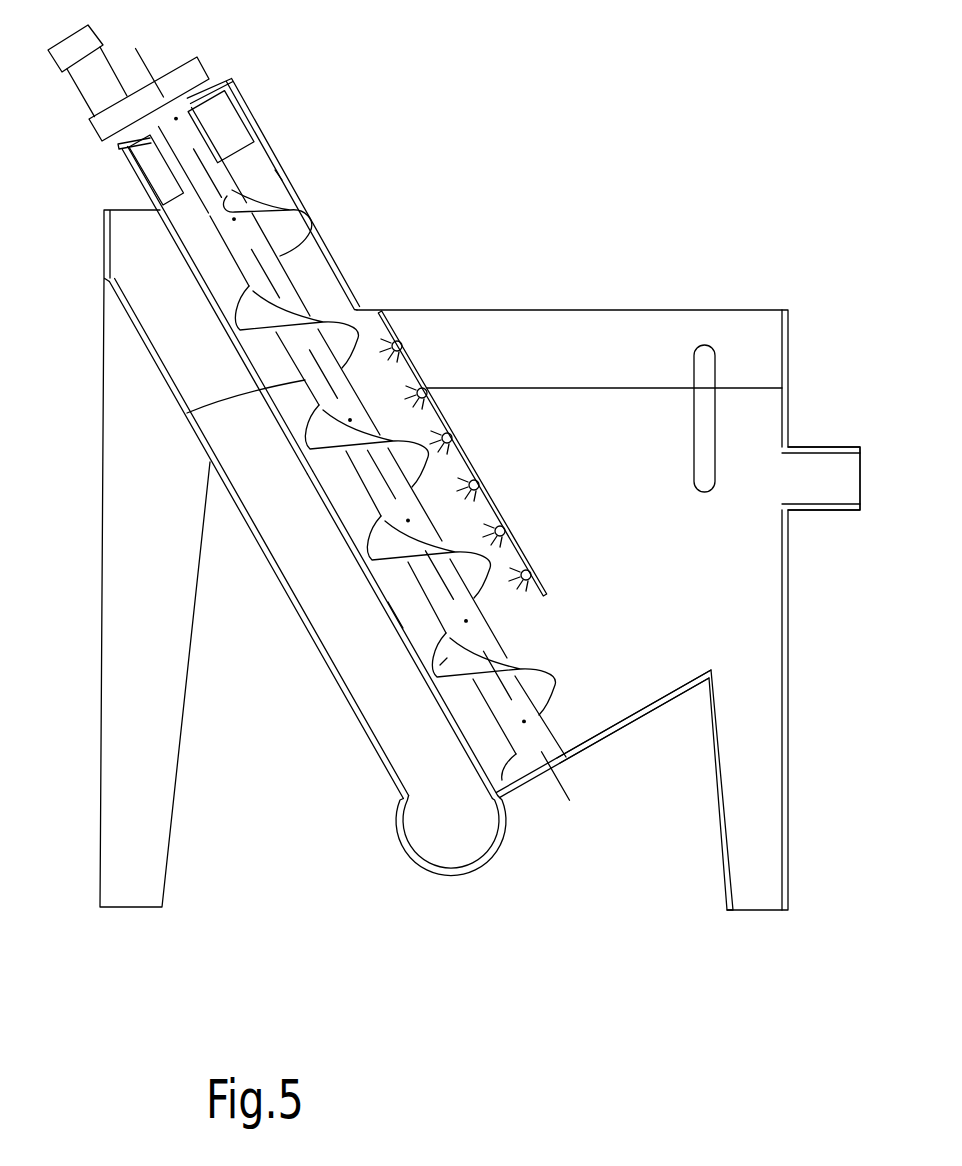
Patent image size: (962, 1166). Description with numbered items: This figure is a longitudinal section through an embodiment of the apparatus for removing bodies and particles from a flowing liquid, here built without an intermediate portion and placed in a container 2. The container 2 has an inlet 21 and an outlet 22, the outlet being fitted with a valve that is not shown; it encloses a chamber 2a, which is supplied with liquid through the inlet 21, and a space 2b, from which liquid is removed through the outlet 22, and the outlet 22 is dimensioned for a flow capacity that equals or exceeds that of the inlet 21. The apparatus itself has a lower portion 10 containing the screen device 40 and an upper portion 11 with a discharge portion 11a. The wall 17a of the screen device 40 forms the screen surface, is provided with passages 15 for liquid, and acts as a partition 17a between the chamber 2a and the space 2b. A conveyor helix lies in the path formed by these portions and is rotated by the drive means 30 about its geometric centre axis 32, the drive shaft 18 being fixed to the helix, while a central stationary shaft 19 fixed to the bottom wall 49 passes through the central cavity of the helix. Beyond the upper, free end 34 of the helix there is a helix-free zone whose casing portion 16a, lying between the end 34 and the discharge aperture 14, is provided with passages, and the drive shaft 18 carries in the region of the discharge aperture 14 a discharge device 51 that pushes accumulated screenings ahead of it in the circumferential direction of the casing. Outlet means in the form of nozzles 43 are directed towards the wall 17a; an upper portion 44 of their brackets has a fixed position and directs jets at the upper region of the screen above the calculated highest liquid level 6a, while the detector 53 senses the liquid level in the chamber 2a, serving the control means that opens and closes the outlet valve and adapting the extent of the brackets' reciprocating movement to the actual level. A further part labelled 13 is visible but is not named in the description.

The container 2 is at (645, 310).
The chamber 2a is at (641, 683).
The space 2b is at (186, 335).
The calculated highest liquid level 6a is at (517, 387).
The lower portion 10 is at (440, 665).
The upper portion 11 is at (263, 148).
The discharge portion 11a is at (150, 172).
The flange 13 is at (212, 78).
The discharge aperture 14 is at (120, 147).
The passages 15 is at (397, 627).
The casing portion in helical-free zone 16a is at (185, 200).
The wall of the screen device 17a is at (234, 340).
The drive shaft 18 is at (185, 247).
The central stationary mechanical shaft 19 is at (187, 413).
The inlet 21 is at (845, 477).
The outlet 22 is at (407, 864).
The drive means 30 is at (83, 88).
The geometric centre axis 32 is at (483, 645).
The free end of the helix 34 is at (278, 170).
The screen device 40 is at (395, 613).
The nozzles 43 is at (407, 356).
The upper portion of brackets 44 is at (448, 423).
The bottom wall 49 is at (527, 785).
The discharge device 51 is at (262, 162).
The detector 53 is at (715, 368).